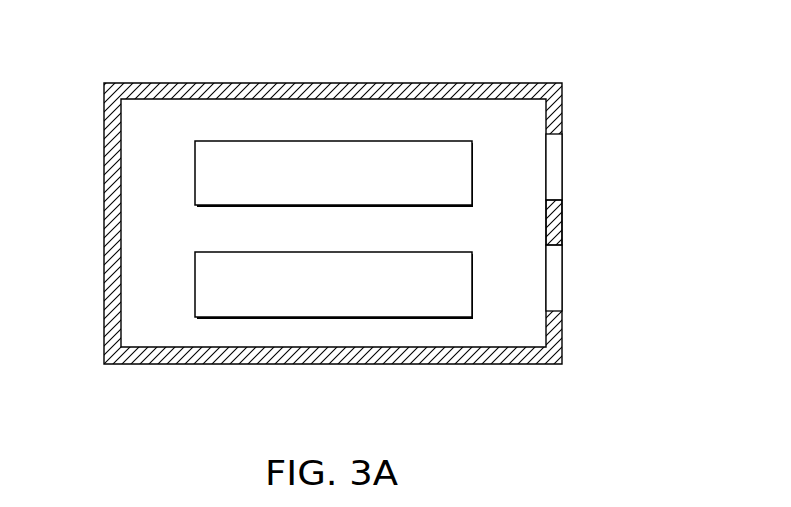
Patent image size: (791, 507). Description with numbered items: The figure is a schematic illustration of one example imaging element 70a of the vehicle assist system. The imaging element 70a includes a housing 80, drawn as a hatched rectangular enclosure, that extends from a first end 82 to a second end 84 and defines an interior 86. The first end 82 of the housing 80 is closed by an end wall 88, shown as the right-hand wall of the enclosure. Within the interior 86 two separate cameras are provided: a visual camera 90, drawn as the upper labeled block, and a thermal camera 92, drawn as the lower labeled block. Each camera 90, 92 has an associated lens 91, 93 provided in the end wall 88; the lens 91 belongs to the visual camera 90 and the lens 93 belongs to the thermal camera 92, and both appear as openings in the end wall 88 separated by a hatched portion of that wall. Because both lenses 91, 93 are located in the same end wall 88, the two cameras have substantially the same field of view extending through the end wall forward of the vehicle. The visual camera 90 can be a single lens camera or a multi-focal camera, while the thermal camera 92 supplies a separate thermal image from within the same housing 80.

The imaging element 70a is at (612, 44).
The housing 80 is at (333, 82).
The first end 82 is at (582, 375).
The second end 84 is at (95, 372).
The interior 86 is at (142, 216).
The end wall 88 is at (562, 222).
The visual camera 90 is at (195, 172).
The lens 91 is at (555, 166).
The thermal camera 92 is at (195, 284).
The lens 93 is at (555, 278).